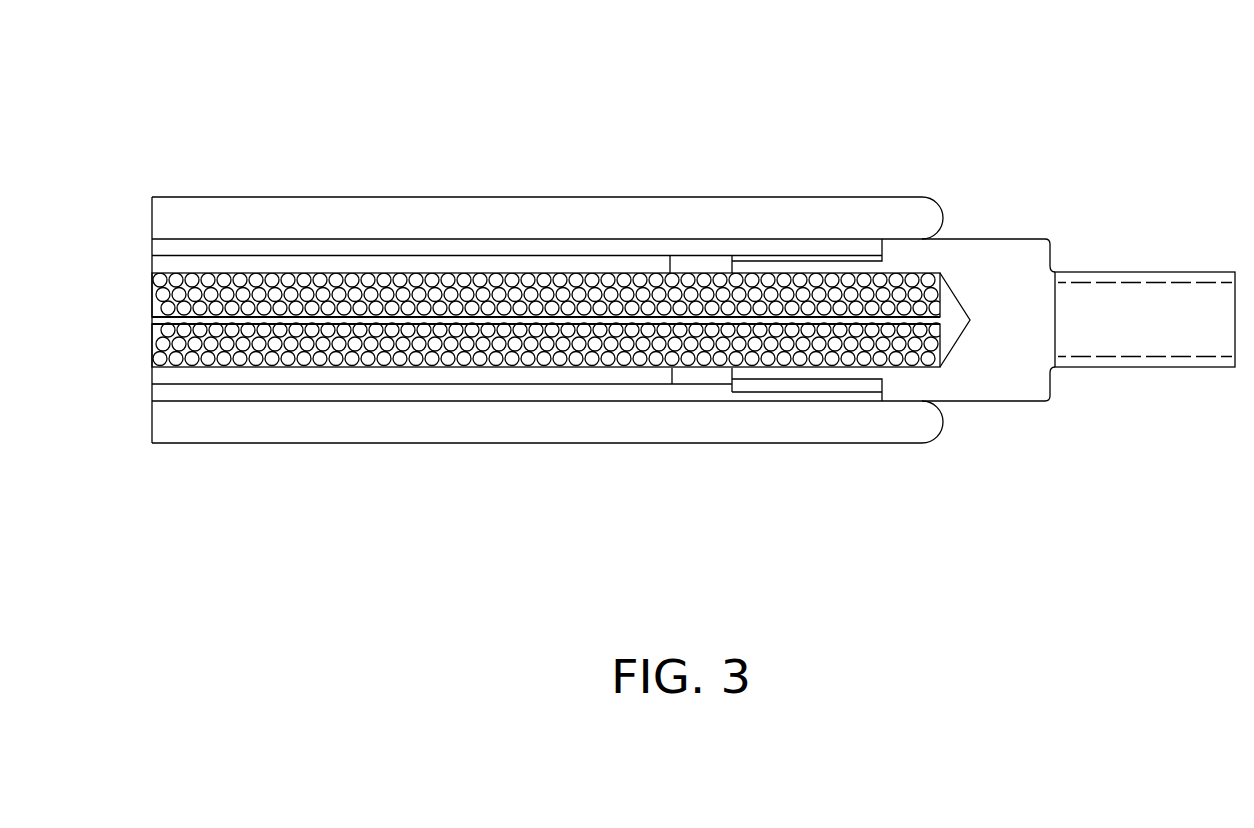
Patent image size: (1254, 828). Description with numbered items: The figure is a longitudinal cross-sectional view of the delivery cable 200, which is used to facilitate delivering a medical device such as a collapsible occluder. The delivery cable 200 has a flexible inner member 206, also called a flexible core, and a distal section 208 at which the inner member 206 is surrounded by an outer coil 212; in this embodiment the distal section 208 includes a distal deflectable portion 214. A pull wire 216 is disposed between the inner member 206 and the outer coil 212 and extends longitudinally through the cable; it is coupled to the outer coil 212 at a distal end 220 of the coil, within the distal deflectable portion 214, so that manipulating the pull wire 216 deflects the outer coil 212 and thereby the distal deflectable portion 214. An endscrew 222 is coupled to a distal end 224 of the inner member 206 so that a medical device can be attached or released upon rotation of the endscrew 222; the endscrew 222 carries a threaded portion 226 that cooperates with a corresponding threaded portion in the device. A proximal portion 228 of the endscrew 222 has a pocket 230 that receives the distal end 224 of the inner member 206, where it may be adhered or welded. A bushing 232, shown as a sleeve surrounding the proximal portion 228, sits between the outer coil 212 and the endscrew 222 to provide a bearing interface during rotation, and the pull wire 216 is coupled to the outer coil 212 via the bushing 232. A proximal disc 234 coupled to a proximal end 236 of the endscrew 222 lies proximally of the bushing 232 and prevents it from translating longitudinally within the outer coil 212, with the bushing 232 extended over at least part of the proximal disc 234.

The delivery cable 200 is at (186, 132).
The inner member 206 is at (408, 260).
The distal section 208 is at (537, 166).
The outer coil 212 is at (605, 210).
The distal deflectable portion 214 is at (358, 466).
The pull wire 216 is at (287, 256).
The distal end 220 is at (772, 208).
The endscrew 222 is at (1120, 270).
The distal end 224 is at (919, 389).
The threaded portion 226 is at (1155, 390).
The proximal portion 228 is at (820, 382).
The pocket 230 is at (943, 288).
The bushing 232 is at (810, 256).
The proximal disc 234 is at (682, 377).
The proximal end 236 is at (725, 403).